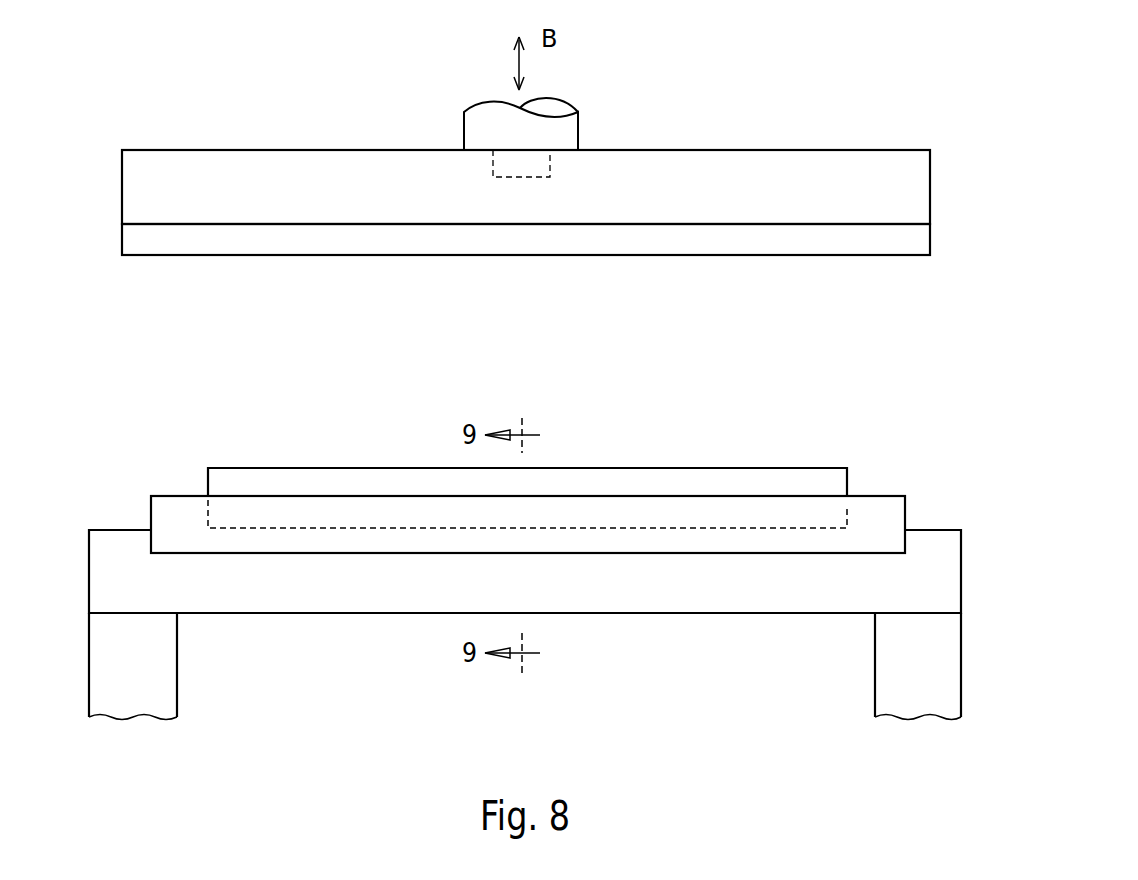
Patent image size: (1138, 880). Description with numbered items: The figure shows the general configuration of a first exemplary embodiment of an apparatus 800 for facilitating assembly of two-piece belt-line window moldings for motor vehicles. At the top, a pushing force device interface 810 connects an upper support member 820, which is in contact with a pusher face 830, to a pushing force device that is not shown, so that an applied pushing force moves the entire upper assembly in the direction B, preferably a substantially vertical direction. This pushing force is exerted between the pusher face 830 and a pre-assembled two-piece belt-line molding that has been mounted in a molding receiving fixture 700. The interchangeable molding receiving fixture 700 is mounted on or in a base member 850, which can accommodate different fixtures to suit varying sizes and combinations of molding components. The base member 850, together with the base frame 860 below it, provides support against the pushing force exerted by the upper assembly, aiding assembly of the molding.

The apparatus 800 is at (1019, 773).
The pushing force device interface 810 is at (576, 138).
The upper support member 820 is at (910, 173).
The pusher face 830 is at (897, 245).
The molding receiving fixture 700 is at (887, 514).
The base member 850 is at (948, 585).
The base frame 860 is at (163, 678).